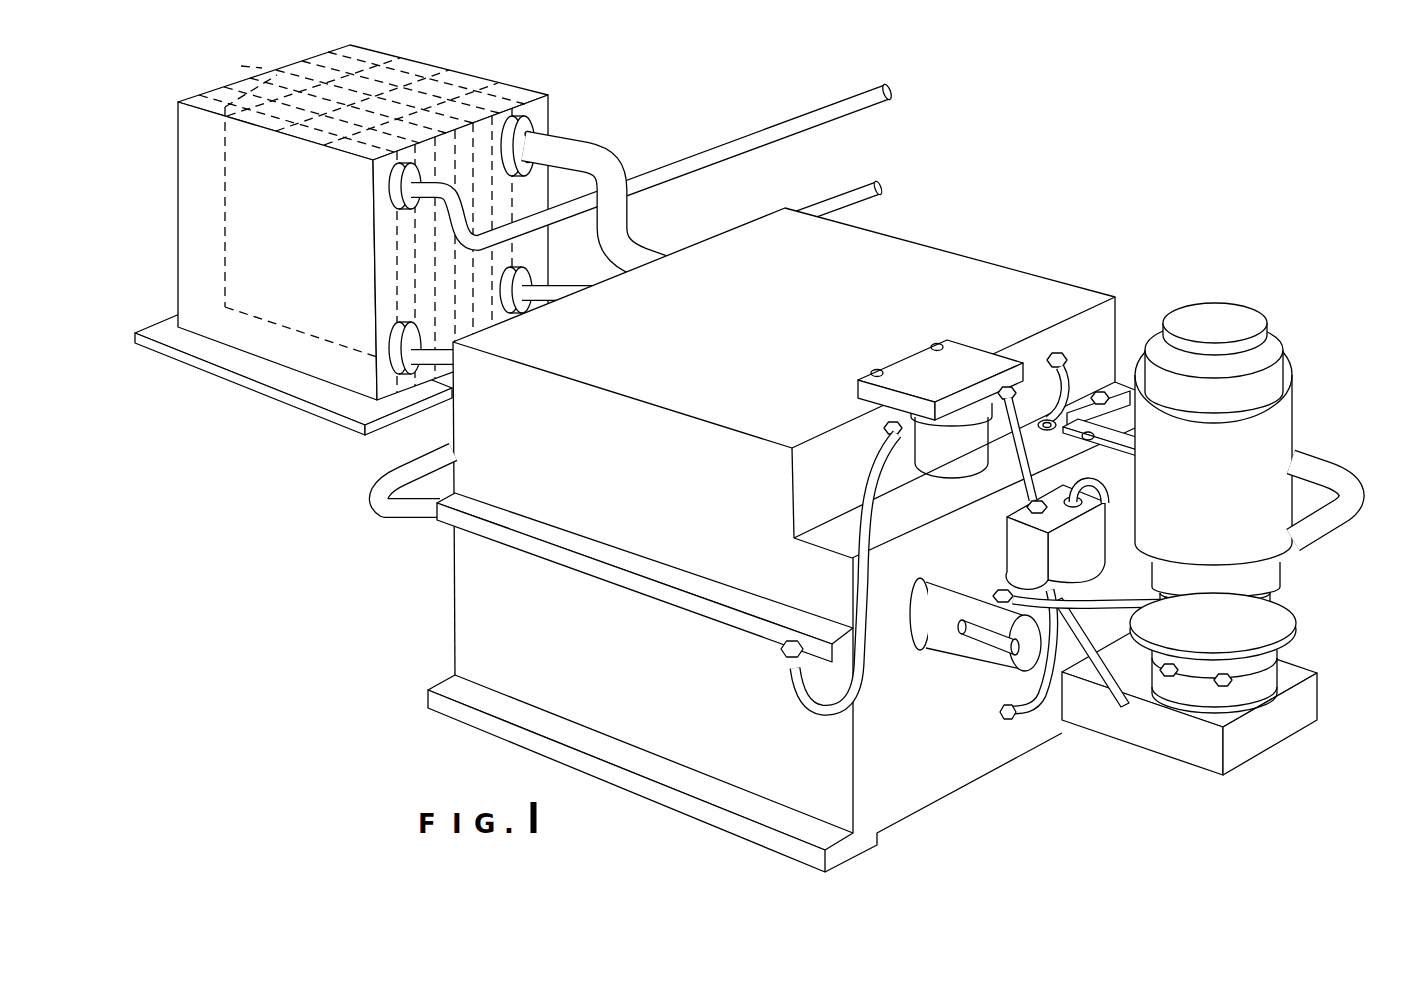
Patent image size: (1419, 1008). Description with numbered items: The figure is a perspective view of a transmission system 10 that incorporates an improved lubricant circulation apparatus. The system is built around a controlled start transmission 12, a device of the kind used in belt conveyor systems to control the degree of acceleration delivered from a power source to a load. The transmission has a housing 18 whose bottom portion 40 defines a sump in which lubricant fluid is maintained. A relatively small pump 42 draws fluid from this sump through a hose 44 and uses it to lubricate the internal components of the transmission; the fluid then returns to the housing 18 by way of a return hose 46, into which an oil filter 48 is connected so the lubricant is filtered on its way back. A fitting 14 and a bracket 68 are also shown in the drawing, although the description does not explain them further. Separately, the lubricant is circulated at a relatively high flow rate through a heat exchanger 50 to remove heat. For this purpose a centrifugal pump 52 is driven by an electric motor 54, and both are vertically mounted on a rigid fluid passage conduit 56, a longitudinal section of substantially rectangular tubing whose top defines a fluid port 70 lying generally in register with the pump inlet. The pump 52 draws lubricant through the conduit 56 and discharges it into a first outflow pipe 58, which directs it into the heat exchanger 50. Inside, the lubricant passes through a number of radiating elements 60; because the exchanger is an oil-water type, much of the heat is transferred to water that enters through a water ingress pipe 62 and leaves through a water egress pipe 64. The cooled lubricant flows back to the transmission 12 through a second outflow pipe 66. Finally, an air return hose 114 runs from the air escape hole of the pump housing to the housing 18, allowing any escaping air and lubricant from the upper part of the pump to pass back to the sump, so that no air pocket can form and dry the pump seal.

The transmission system 10 is at (1080, 163).
The controlled start transmission 12 is at (427, 592).
The inlet fitting 14 is at (953, 627).
The housing 18 is at (1062, 296).
The bottom portion 40 is at (930, 780).
The pump 42 is at (1012, 558).
The hose 44 is at (1048, 735).
The return hose 46 is at (790, 684).
The oil filter 48 is at (922, 448).
The heat exchanger 50 is at (177, 167).
The centrifugal pump 52 is at (1293, 636).
The electric motor 54 is at (1282, 437).
The rigid fluid passage conduit 56 is at (1195, 748).
The first outflow pipe 58 is at (1347, 483).
The radiating elements 60 is at (275, 72).
The water ingress pipe 62 is at (851, 193).
The water egress pipe 64 is at (801, 115).
The second outflow pipe 66 is at (378, 498).
The mounting bracket 68 is at (1098, 693).
The fluid port 70 is at (1110, 437).
The air return hose 114 is at (1158, 525).